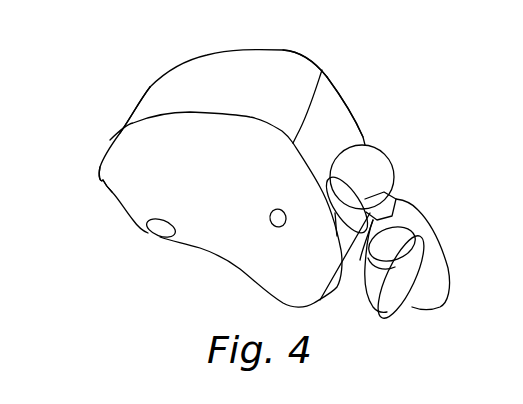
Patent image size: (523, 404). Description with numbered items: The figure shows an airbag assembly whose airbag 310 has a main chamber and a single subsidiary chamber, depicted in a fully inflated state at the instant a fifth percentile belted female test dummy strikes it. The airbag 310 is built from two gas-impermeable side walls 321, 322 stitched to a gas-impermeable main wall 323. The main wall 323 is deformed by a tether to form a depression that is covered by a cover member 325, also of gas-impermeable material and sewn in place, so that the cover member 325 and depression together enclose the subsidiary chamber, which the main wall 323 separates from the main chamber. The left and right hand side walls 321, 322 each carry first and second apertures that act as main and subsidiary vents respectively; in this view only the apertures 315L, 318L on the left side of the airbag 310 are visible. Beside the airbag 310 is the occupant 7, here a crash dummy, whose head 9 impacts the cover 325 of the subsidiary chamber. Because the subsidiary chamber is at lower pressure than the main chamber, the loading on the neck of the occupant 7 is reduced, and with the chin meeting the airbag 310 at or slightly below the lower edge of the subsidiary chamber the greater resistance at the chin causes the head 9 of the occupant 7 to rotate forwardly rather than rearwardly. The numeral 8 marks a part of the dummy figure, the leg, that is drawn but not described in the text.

The airbag 310 is at (207, 56).
The side wall 322 is at (318, 66).
The main wall 323 is at (150, 88).
The cover member 325 is at (332, 108).
The side wall 321 is at (109, 188).
The first aperture 315L is at (147, 230).
The second aperture 318L is at (278, 227).
The head 9 is at (394, 162).
The occupant 7 is at (408, 203).
The leg 8 is at (441, 245).